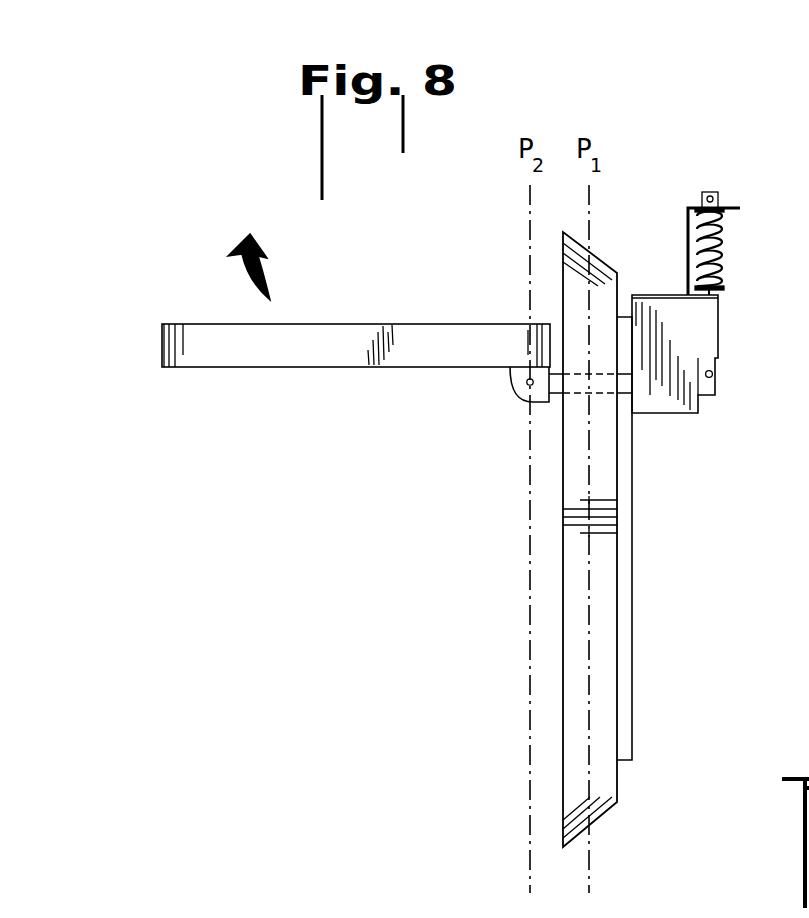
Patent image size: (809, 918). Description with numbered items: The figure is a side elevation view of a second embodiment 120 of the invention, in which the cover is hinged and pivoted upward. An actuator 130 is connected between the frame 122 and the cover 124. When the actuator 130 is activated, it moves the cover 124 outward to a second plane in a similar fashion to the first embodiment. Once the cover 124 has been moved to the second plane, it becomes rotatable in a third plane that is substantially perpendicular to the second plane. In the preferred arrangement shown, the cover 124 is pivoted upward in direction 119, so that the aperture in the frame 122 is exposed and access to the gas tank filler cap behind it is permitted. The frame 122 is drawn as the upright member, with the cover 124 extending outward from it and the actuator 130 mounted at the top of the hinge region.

The direction 119 is at (262, 279).
The second embodiment 120 is at (403, 246).
The frame 122 is at (617, 778).
The cover 124 is at (360, 368).
The actuator 130 is at (758, 235).